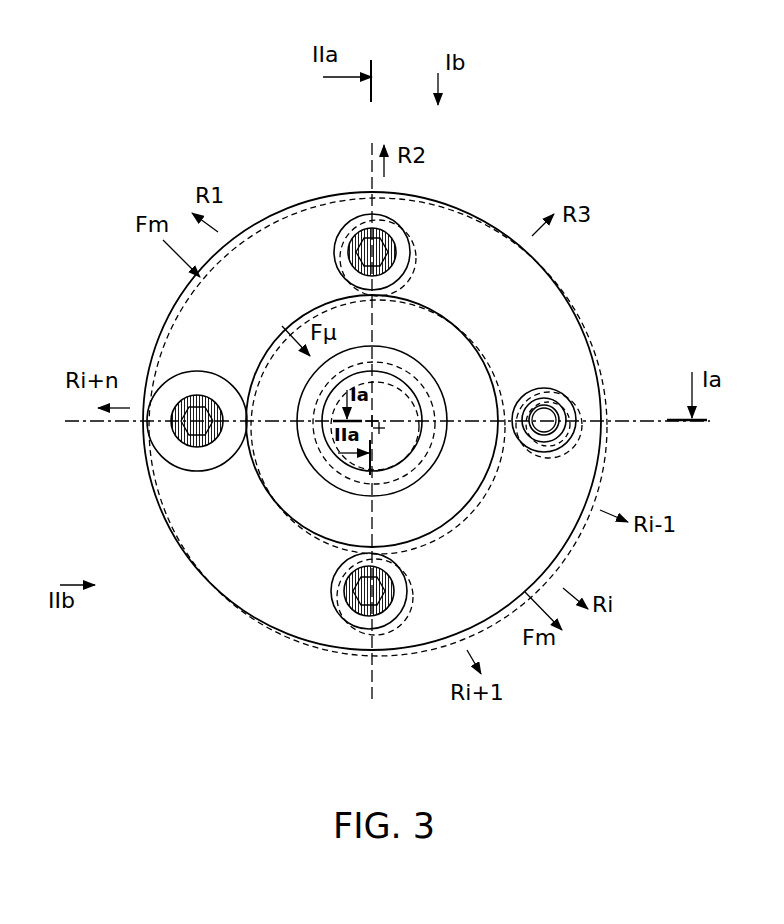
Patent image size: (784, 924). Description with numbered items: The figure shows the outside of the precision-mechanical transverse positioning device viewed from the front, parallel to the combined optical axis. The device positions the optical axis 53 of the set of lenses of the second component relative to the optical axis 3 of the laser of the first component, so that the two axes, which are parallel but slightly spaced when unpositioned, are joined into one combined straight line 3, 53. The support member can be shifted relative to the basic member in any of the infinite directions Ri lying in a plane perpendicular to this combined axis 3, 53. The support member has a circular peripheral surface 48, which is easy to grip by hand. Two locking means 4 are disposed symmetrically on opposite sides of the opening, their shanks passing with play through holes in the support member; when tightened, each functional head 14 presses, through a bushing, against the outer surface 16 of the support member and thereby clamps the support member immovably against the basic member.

The optical axis 3 is at (375, 419).
The optical axis 53 is at (381, 427).
The locking means 4 is at (573, 392).
The functional head 14 is at (177, 472).
The outer surface 16 is at (529, 539).
The peripheral surface 48 is at (290, 646).